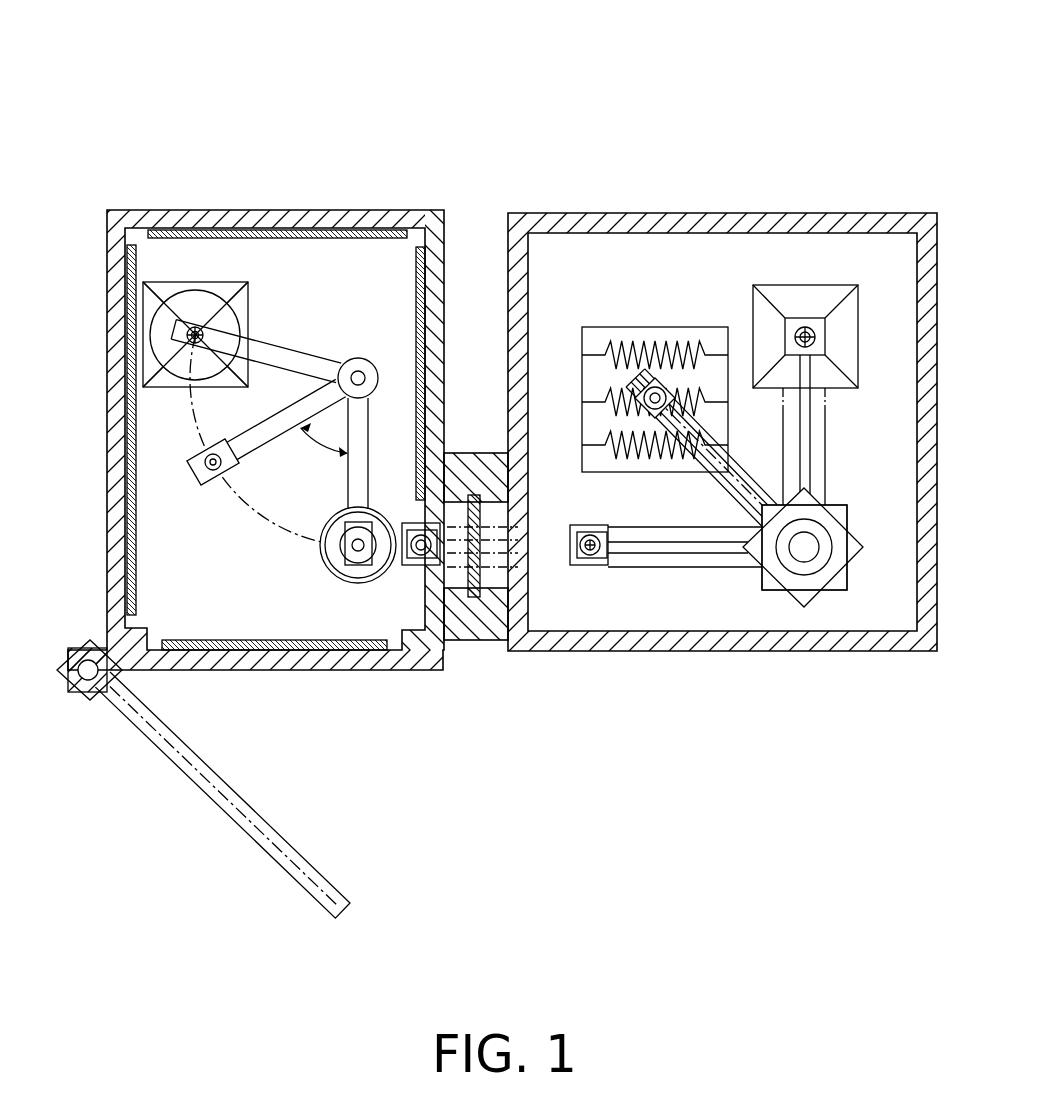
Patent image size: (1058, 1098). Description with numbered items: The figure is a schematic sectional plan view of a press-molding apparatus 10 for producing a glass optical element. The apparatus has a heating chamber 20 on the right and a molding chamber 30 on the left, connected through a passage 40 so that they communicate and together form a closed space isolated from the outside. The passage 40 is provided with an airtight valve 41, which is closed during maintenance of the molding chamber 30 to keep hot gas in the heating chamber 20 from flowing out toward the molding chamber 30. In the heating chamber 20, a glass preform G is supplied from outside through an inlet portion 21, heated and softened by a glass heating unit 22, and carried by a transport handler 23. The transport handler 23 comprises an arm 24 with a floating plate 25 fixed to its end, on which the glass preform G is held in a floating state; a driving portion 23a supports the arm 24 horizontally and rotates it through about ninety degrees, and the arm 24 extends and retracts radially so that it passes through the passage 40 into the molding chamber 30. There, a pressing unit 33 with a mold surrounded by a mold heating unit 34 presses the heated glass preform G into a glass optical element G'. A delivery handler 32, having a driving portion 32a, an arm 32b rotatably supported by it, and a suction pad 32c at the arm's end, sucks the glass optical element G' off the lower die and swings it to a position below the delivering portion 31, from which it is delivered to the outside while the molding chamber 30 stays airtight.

The press-molding apparatus 10 is at (636, 140).
The heating chamber 20 is at (717, 213).
The inlet portion 21 is at (808, 293).
The glass heating unit 22 is at (657, 327).
The transport handler 23 is at (728, 572).
The driving portion 23a is at (842, 513).
The arm 24 is at (663, 567).
The floating plate 25 is at (590, 567).
The glass preform G is at (569, 513).
The molding chamber 30 is at (288, 210).
The delivering portion 31 is at (150, 302).
The delivery handler 32 is at (300, 398).
The driving portion 32a is at (358, 358).
The arm 32b is at (283, 440).
The suction pad 32c is at (214, 472).
The pressing unit 33 is at (350, 581).
The mold heating unit 34 is at (342, 551).
The glass optical element G' is at (131, 335).
The passage 40 is at (494, 583).
The airtight valve 41 is at (476, 494).